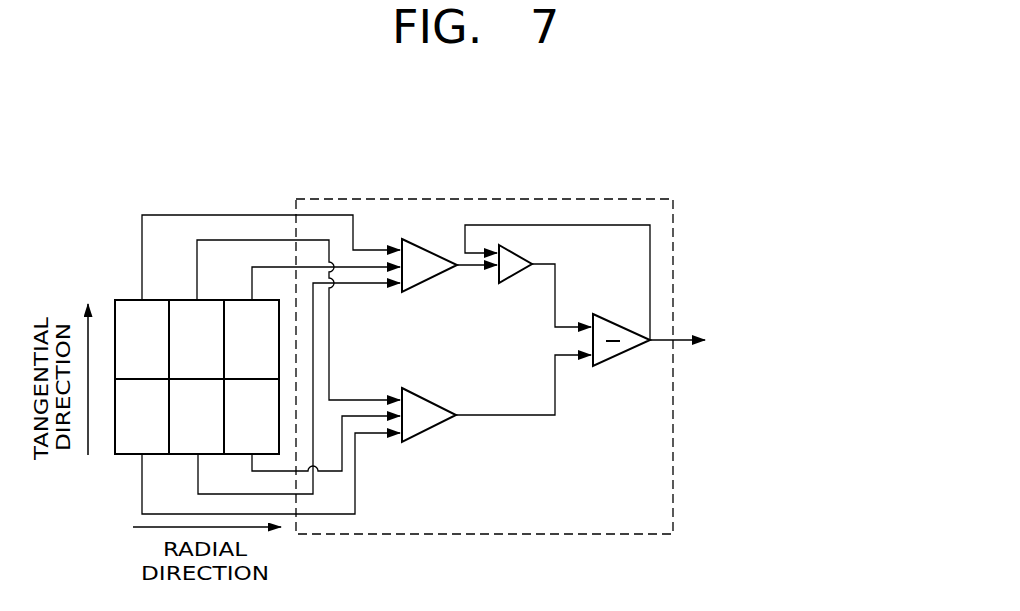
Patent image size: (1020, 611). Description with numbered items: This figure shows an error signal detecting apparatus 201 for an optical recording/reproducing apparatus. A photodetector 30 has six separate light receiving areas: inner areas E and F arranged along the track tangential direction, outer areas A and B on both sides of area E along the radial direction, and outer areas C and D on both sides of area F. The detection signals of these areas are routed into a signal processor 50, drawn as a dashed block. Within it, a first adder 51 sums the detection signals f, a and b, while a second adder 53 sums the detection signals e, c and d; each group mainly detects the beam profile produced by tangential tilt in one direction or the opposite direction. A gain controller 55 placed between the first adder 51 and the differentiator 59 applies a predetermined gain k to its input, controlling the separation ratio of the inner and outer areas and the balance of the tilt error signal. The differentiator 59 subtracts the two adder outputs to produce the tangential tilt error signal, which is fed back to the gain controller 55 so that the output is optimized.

The photodetector 30 is at (109, 294).
The signal processor 50 is at (601, 197).
The first adder 51 is at (425, 284).
The second adder 53 is at (433, 402).
The gain controller 55 is at (515, 284).
The differentiator 59 is at (617, 312).
The error signal detecting apparatus 201 is at (713, 159).